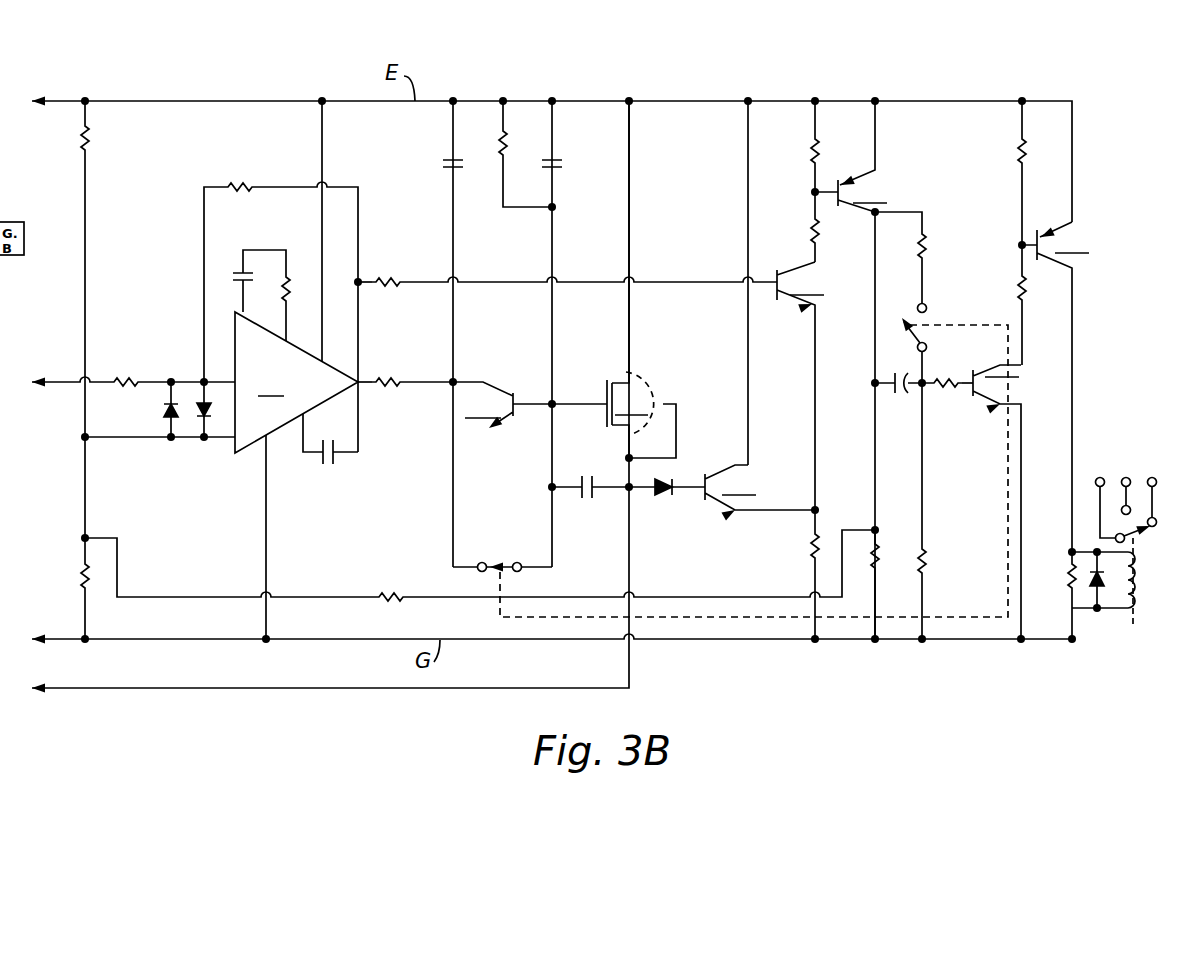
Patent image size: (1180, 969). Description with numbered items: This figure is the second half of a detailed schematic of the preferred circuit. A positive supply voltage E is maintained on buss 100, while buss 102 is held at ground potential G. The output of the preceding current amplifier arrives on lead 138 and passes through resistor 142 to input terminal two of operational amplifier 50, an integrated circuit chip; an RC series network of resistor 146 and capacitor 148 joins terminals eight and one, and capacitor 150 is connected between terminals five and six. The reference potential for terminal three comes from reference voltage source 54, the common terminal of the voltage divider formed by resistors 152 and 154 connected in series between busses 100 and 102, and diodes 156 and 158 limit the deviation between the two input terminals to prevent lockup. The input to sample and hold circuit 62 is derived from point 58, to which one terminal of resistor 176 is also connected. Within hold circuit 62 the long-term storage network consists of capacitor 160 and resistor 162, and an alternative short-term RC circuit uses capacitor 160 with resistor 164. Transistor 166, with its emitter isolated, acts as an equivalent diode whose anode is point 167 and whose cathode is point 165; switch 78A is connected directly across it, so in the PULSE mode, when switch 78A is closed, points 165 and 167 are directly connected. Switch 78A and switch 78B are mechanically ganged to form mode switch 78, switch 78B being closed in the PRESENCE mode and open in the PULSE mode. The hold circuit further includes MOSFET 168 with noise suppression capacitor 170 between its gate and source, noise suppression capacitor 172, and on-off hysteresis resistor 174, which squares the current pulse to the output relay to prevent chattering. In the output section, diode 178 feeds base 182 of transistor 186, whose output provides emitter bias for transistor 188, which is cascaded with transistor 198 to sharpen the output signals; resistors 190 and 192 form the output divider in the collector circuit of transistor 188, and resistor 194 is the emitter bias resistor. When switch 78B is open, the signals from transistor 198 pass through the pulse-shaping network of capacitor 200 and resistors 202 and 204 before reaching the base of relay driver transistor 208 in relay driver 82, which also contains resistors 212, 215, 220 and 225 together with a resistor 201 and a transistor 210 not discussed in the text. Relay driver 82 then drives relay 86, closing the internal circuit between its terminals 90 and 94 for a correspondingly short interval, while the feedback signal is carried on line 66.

The operational amplifier 50 is at (281, 277).
The reference voltage source 54 is at (87, 538).
The point 58 is at (372, 382).
The sample and hold circuit 62 is at (627, 68).
The line 66 is at (165, 688).
The mode switch 78 is at (789, 618).
The switch 78A is at (522, 563).
The switch 78B is at (925, 330).
The relay driver 82 is at (1086, 324).
The relay 86 is at (1118, 630).
The terminal 90 is at (1101, 478).
The terminal 94 is at (1152, 478).
The buss 100 is at (244, 100).
The buss 102 is at (232, 640).
The lead 138 is at (68, 362).
The resistor 142 is at (120, 382).
The resistor 146 is at (296, 283).
The capacitor 148 is at (238, 275).
The capacitor 150 is at (337, 458).
The resistor 152 is at (90, 146).
The resistor 154 is at (88, 588).
The diode 156 is at (166, 410).
The diode 158 is at (214, 418).
The capacitor 160 is at (560, 162).
The resistor 162 is at (520, 146).
The resistor 164 is at (390, 382).
The point 165 is at (455, 380).
The transistor 166 is at (502, 407).
The point 167 is at (556, 402).
The MOSFET 168 is at (633, 281).
The noise suppression capacitor 170 is at (596, 488).
The noise suppression capacitor 172 is at (444, 167).
The on-off hysteresis resistor 174 is at (396, 593).
The resistor 176 is at (428, 258).
The diode 178 is at (662, 490).
The base 182 is at (702, 488).
The transistor 186 is at (760, 492).
The transistor 188 is at (803, 386).
The resistor 190 is at (812, 160).
The resistor 192 is at (812, 240).
The emitter bias resistor 194 is at (812, 554).
The transistor 198 is at (854, 158).
The capacitor 200 is at (893, 385).
The resistor 201 is at (926, 258).
The resistor 202 is at (879, 568).
The resistor 204 is at (925, 572).
The relay driver transistor 208 is at (999, 496).
The transistor 210 is at (1058, 387).
The resistor 212 is at (970, 386).
The resistor 215 is at (1016, 156).
The resistor 220 is at (1020, 288).
The resistor 225 is at (1067, 584).